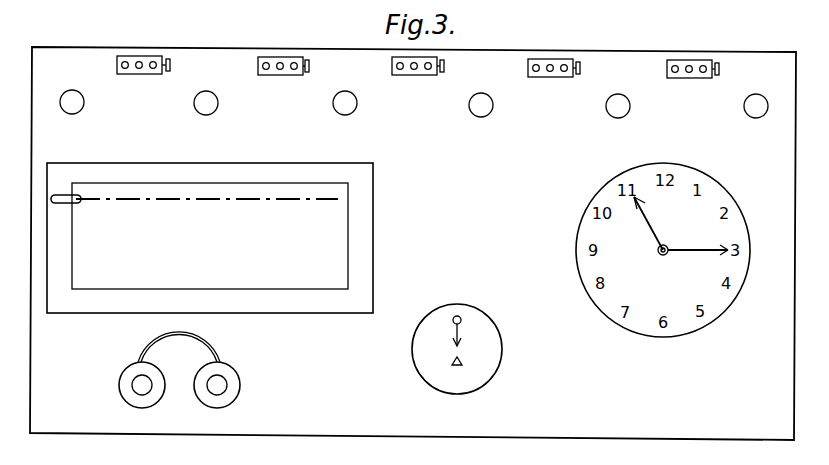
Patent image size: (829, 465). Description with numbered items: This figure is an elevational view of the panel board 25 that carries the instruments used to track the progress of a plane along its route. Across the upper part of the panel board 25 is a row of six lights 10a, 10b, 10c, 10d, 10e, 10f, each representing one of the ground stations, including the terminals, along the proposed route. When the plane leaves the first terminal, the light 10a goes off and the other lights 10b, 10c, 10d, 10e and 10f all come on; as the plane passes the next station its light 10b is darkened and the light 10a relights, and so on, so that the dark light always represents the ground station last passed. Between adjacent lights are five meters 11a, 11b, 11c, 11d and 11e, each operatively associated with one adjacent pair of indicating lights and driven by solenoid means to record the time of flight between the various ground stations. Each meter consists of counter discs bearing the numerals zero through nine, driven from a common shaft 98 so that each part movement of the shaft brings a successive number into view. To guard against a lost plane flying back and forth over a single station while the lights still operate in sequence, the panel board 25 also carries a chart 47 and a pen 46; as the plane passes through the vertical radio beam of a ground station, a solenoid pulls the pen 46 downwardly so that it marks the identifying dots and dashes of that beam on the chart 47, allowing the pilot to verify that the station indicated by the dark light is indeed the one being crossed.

The panel board 25 is at (328, 437).
The light 10a is at (77, 113).
The light 10b is at (204, 115).
The light 10c is at (358, 122).
The light 10d is at (480, 117).
The light 10e is at (612, 117).
The light 10f is at (754, 118).
The meter 11a is at (131, 75).
The meter 11b is at (276, 76).
The meter 11c is at (410, 76).
The meter 11d is at (546, 78).
The meter 11e is at (684, 79).
The common shaft 98 is at (305, 62).
The pen 46 is at (66, 203).
The chart 47 is at (210, 238).